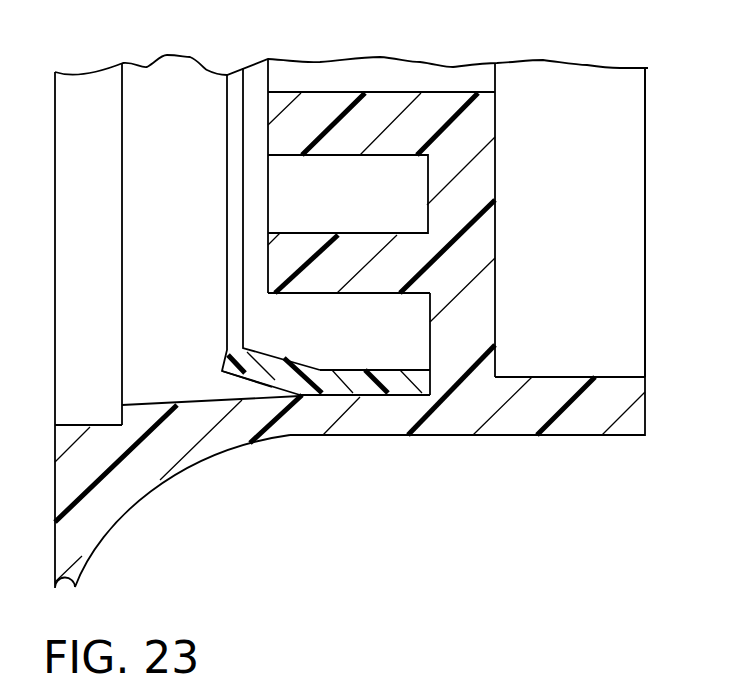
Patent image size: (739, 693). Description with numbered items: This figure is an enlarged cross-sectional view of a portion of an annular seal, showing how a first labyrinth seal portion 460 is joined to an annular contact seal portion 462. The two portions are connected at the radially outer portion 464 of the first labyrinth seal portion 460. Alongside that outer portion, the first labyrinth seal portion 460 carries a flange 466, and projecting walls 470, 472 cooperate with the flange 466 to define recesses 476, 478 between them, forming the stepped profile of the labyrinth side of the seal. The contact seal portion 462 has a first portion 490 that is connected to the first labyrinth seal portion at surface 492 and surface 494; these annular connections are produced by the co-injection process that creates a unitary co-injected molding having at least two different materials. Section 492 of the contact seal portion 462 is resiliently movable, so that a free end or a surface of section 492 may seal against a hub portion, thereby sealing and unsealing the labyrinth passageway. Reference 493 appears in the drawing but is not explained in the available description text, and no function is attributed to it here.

The first labyrinth seal portion 460 is at (141, 502).
The contact seal portion 462 is at (240, 352).
The radially outer portion 464 is at (458, 423).
The flange 466 is at (495, 262).
The projecting wall 470 is at (313, 107).
The projecting wall 472 is at (304, 243).
The recess 476 is at (415, 192).
The recess 478 is at (420, 343).
The first portion 490 is at (365, 370).
The surface 492 is at (272, 387).
The strip bottom surface 493 is at (373, 397).
The surface 494 is at (458, 383).